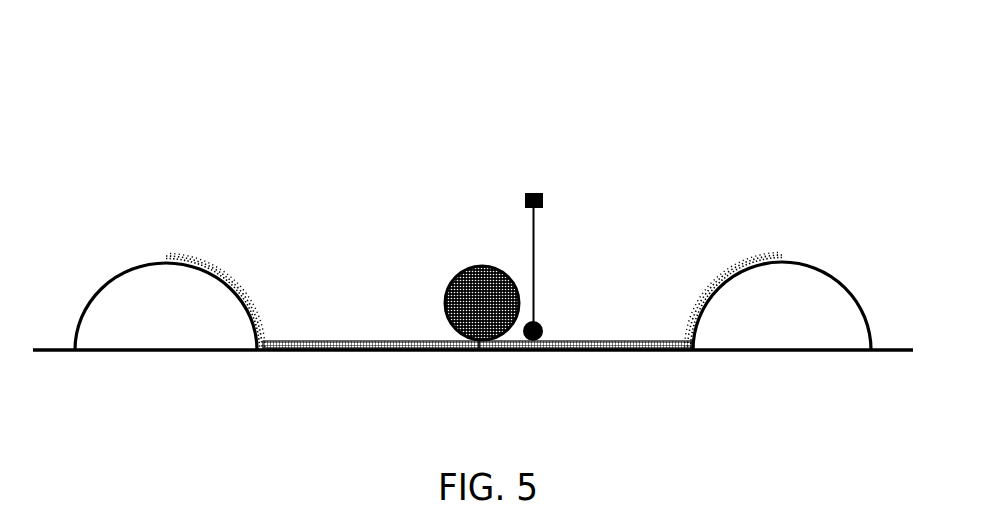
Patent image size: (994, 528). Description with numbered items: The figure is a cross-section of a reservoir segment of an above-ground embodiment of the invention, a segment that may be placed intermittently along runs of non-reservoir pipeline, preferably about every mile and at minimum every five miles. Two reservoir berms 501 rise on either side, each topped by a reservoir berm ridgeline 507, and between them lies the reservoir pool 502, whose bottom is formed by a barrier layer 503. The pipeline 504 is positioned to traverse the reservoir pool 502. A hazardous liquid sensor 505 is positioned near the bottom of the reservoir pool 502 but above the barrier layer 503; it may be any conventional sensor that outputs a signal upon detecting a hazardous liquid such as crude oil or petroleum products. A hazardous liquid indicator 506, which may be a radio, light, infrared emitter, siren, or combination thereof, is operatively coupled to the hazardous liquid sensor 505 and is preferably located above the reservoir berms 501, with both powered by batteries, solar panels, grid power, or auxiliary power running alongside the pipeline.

The reservoir berms 501 is at (147, 295).
The reservoir pool 502 is at (292, 346).
The barrier layer 503 is at (672, 342).
The pipeline 504 is at (485, 290).
The hazardous liquid sensor 505 is at (542, 327).
The hazardous liquid indicator 506 is at (541, 193).
The reservoir berm ridgelines 507 is at (158, 254).